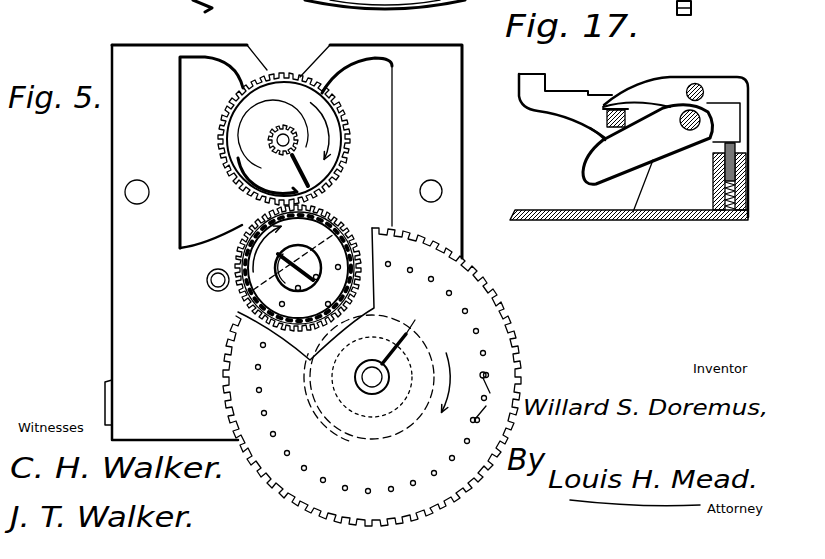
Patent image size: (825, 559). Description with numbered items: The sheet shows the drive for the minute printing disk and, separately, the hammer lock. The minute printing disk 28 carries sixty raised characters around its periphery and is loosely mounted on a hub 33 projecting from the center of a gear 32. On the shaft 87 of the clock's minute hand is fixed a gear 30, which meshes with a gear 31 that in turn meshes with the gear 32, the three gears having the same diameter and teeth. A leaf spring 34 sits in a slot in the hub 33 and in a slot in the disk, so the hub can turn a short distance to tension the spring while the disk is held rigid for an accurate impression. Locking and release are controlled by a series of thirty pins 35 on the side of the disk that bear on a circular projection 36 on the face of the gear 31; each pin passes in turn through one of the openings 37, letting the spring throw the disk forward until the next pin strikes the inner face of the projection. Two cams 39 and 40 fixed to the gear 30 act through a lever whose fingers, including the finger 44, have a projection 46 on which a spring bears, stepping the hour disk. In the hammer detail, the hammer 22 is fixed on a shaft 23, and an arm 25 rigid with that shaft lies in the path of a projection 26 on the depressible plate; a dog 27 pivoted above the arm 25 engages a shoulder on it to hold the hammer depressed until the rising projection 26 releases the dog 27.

In FIG. 17, the hammer 22 is at (560, 94).
In FIG. 17, the shaft 23 is at (688, 131).
In FIG. 17, the arm 25 is at (648, 144).
In FIG. 17, the projection 26 is at (598, 131).
In FIG. 17, the dog 27 is at (637, 90).
In FIG. 5, the minute printing disk 28 is at (372, 377).
In FIG. 5, the gear 30 is at (344, 107).
In FIG. 5, the gear 31 is at (320, 207).
In FIG. 5, the gear 32 is at (309, 361).
In FIG. 5, the hub 33 is at (373, 394).
In FIG. 5, the leaf spring 34 is at (386, 360).
In FIG. 5, the pins 35 is at (488, 397).
In FIG. 5, the circular projection 36 is at (338, 219).
In FIG. 5, the openings 37 is at (236, 258).
In FIG. 5, the cam 39 is at (276, 90).
In FIG. 5, the cam 40 is at (269, 144).
In FIG. 5, the shaft of the minute hand 87 is at (277, 135).
In FIG. 5, the finger 44 is at (262, 27).
In FIG. 5, the projection 46 is at (137, 9).